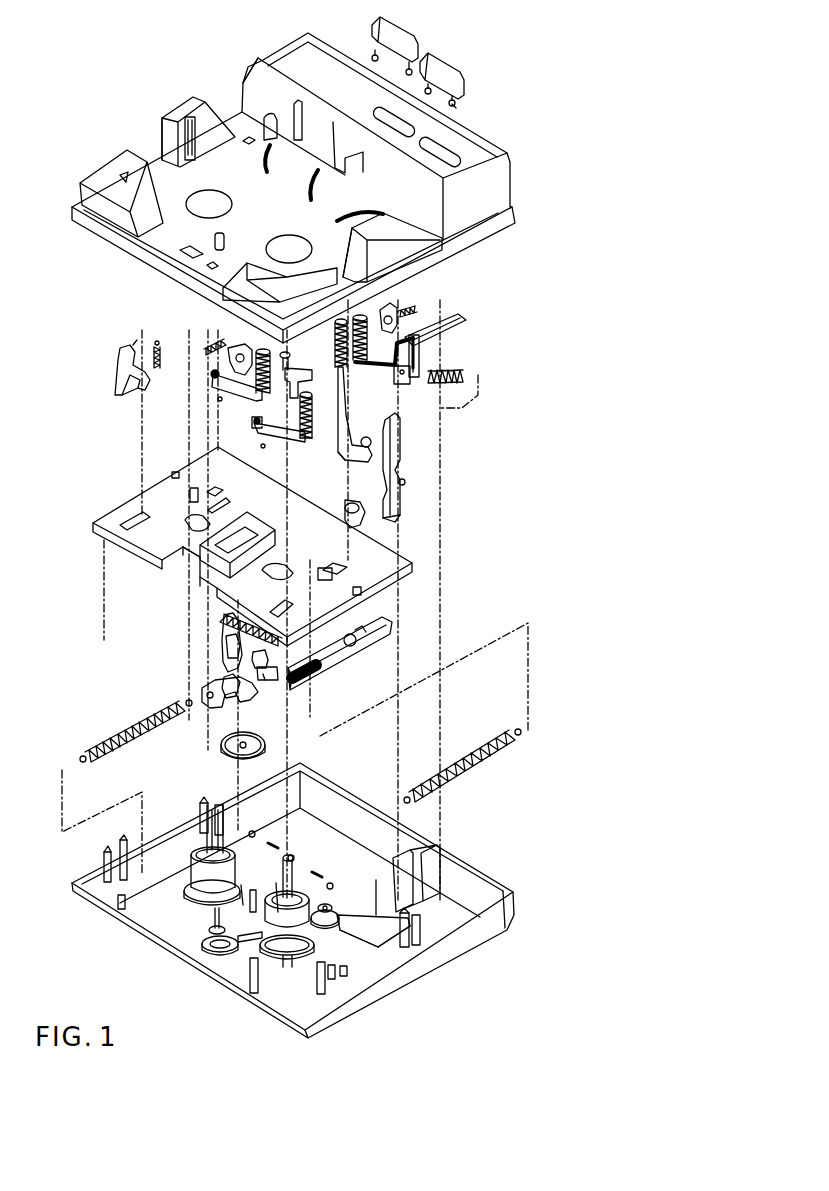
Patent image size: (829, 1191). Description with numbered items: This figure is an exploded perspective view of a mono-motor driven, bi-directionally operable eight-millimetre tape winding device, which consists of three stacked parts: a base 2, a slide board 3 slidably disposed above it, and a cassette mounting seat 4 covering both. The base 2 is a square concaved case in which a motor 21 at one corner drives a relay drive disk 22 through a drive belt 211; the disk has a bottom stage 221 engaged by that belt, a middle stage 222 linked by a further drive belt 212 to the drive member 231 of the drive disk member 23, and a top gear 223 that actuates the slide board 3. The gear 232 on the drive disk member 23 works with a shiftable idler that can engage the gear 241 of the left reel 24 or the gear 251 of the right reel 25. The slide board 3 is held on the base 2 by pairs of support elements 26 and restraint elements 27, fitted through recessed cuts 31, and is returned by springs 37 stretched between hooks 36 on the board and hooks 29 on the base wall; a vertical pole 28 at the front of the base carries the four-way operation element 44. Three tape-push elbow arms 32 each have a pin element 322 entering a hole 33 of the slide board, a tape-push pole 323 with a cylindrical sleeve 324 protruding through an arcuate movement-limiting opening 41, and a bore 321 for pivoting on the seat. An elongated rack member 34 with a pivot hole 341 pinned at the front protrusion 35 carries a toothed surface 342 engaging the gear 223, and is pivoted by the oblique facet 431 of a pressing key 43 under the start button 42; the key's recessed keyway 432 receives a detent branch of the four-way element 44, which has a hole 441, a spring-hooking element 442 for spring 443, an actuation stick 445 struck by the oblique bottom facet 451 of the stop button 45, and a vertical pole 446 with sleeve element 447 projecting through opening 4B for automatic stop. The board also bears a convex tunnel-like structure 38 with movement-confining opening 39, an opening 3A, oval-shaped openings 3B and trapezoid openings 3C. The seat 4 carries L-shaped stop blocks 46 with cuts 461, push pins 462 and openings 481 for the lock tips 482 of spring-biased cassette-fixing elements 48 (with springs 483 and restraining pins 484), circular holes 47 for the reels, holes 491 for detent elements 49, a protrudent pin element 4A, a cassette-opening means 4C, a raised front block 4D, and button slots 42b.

The base 2 is at (428, 963).
The motor 21 is at (470, 880).
The relay drive disk 22 is at (348, 952).
The bottom stage 221 is at (347, 933).
The middle stage 222 is at (340, 913).
The gear 223 is at (330, 906).
The drive belt 211 is at (380, 953).
The drive belt 212 is at (250, 940).
The drive disk member 23 is at (222, 955).
The drive member 231 is at (210, 950).
The gear 232 is at (208, 931).
The left reel 24 is at (192, 850).
The gear 241 is at (186, 895).
The right reel 25 is at (272, 893).
The gear 251 is at (293, 964).
The support element 26 is at (112, 858).
The restraint element 27 is at (124, 842).
The vertical pole 28 is at (395, 862).
The hook 29 is at (120, 907).
The slide board 3 is at (414, 565).
The recessed cut 31 is at (173, 472).
The tape-push elbow arm 32 is at (230, 395).
The bore 321 is at (366, 437).
The pin element 322 is at (338, 460).
The tape-push pole 323 is at (308, 442).
The cylindrical sleeve 324 is at (313, 400).
The hole 33 is at (213, 487).
The elongated rack member 34 is at (350, 650).
The pivot hole 341 is at (360, 628).
The toothed surface 342 is at (356, 642).
The front protrusion 35 is at (352, 517).
The hook 36 is at (193, 488).
The spring 37 is at (144, 715).
The convex tunnel-like structure 38 is at (213, 572).
The movement-confining opening 39 is at (235, 532).
The opening 3A is at (228, 500).
The oval-shaped opening 3B is at (185, 523).
The opening 3C is at (128, 520).
The cassette mounting seat 4 is at (133, 256).
The arcuate movement-limiting opening 41 is at (311, 165).
The start button 42 is at (396, 37).
The pressing key 43 is at (400, 455).
The oblique facet 431 is at (398, 511).
The recessed keyway 432 is at (405, 482).
The four-way operation element 44 is at (433, 322).
The hole 441 is at (378, 368).
The spring-hooking element 442 is at (403, 385).
The spring 443 is at (465, 373).
The actuation stick 445 is at (440, 330).
The vertical pole 446 is at (362, 316).
The sleeve element 447 is at (338, 322).
The stop button 45 is at (446, 65).
The oblique bottom facet 451 is at (456, 108).
The L-shaped stop block 46 is at (183, 100).
The cut 461 is at (146, 133).
The end-bended push pin 462 is at (193, 133).
The circular hole 47 is at (215, 195).
The cassette-fixing element 48 is at (115, 375).
The opening 481 is at (130, 180).
The lock tip 482 is at (135, 345).
The spring 483 is at (161, 350).
The restraining pin 484 is at (125, 395).
The detent element 49 is at (230, 365).
The hole 491 is at (247, 137).
The protrudent pin element 4A is at (225, 238).
The opening 4B is at (349, 175).
The cassette-opening means 4C is at (243, 78).
The front block 4D is at (280, 282).
The button slots 42b is at (417, 137).